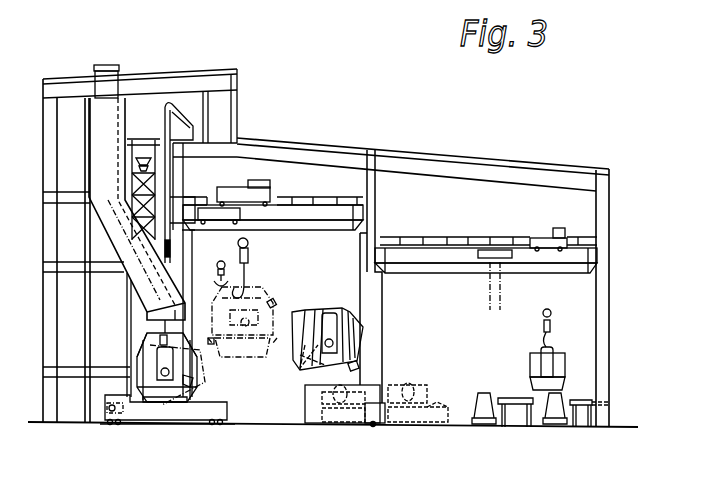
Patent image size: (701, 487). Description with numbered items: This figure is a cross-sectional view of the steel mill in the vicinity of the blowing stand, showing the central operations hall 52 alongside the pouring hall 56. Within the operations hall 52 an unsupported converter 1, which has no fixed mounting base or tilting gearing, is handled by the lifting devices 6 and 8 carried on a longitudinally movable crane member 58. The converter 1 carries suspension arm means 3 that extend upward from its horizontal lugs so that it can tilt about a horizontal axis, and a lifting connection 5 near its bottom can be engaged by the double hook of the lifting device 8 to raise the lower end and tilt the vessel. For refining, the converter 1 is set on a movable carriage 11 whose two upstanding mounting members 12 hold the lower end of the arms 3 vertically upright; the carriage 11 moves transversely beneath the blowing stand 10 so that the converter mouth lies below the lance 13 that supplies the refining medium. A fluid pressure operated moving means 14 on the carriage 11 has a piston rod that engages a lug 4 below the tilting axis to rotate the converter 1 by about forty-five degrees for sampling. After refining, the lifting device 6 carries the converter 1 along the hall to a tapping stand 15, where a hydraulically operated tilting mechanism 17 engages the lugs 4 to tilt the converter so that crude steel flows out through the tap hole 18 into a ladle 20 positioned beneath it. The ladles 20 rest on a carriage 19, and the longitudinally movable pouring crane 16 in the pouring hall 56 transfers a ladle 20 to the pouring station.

The converter 1 is at (143, 335).
The suspension arm means 3 is at (137, 363).
The lug 4 is at (165, 402).
The lifting connection 5 is at (212, 345).
The lifting device 6 is at (250, 256).
The lifting device 8 is at (216, 285).
The blowing stand 10 is at (143, 300).
The movable carriage 11 is at (193, 419).
The mounting member 12 is at (190, 381).
The lance 13 is at (170, 255).
The fluid pressure operated moving means 14 is at (133, 421).
The tapping stand 15 is at (305, 406).
The pouring crane 16 is at (442, 273).
The hydraulically operated tilting mechanism 17 is at (318, 347).
The tap hole 18 is at (274, 303).
The carriage 19 is at (373, 424).
The ladle 20 is at (332, 423).
The operations hall 52 is at (308, 191).
The pouring hall 56 is at (490, 218).
The crane member 58 is at (298, 228).